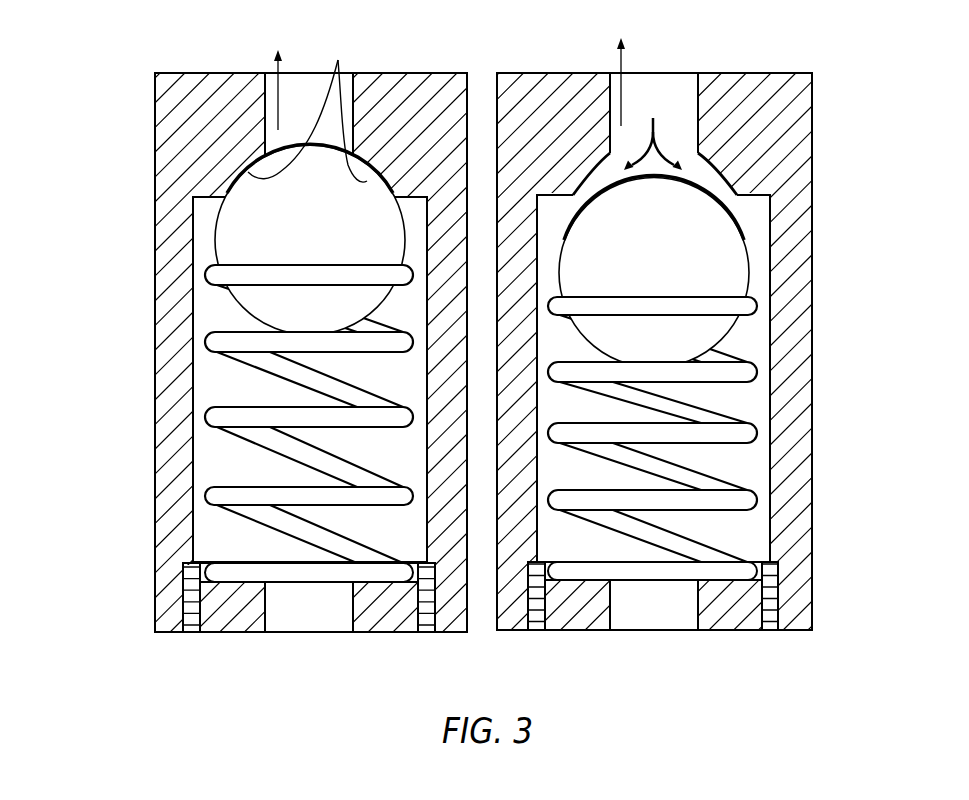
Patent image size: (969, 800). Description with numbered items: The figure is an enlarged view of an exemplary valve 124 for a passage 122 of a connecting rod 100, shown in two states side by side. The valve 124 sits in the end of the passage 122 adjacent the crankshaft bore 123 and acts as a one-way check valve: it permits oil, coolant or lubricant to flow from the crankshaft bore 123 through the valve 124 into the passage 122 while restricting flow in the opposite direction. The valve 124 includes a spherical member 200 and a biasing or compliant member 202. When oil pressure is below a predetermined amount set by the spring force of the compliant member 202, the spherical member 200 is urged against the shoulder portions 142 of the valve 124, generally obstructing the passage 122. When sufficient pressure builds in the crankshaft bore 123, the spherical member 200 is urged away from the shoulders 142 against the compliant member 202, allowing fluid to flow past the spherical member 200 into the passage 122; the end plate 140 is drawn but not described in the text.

The connecting rod 100 is at (173, 143).
The passage 122 is at (322, 618).
The crankshaft bore 123 is at (450, 71).
The valve 124 is at (112, 405).
The spring retainer 140 is at (225, 580).
The shoulder portions 142 is at (710, 175).
The spherical member 200 is at (237, 230).
The compliant member 202 is at (220, 415).